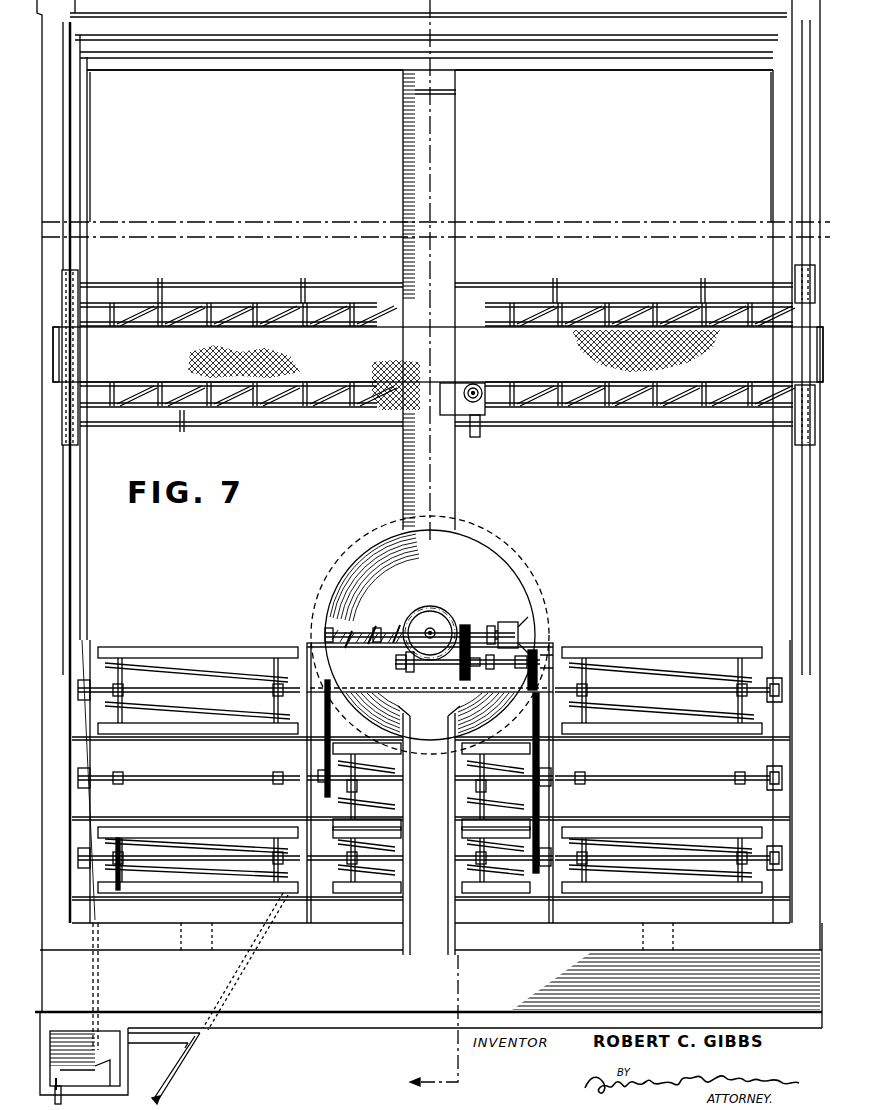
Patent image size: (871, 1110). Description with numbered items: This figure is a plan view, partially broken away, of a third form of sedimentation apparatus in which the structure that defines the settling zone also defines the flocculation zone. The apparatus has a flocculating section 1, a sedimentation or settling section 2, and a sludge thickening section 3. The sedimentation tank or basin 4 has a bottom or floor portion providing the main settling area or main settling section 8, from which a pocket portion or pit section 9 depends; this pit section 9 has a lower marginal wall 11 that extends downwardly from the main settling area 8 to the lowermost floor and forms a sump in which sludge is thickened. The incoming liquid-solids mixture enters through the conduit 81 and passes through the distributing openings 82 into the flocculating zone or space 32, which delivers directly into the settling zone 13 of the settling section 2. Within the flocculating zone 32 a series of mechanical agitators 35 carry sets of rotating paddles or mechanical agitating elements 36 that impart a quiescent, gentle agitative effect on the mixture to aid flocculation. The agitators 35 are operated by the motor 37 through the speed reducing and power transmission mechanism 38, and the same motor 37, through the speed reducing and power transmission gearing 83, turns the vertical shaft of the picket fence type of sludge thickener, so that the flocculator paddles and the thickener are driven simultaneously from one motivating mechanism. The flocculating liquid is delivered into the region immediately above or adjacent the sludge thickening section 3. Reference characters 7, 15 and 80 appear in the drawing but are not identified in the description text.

The flocculating section 1 is at (668, 771).
The sedimentation or settling section 2 is at (614, 146).
The sludge thickening section 3 is at (365, 585).
The sedimentation tank or basin 4 is at (245, 146).
The truss girders 7 is at (611, 300).
The main settling area or main settling section 8 is at (438, 417).
The pocket portion or pit section 9 is at (436, 626).
The lower marginal wall 11 is at (360, 553).
The settling zone 13 is at (403, 270).
The guide roller bracket 15 is at (459, 404).
The flocculating zone or space 32 is at (676, 772).
The mechanical agitators 35 is at (345, 688).
The mechanical agitating elements 36 is at (213, 655).
The motor 37 is at (500, 627).
The speed reducing and power transmission mechanism 38 is at (540, 655).
The treadle 80 is at (249, 1029).
The conduit 81 is at (428, 975).
The distributing openings 82 is at (195, 945).
The speed reducing and power transmission gearing 83 is at (453, 643).